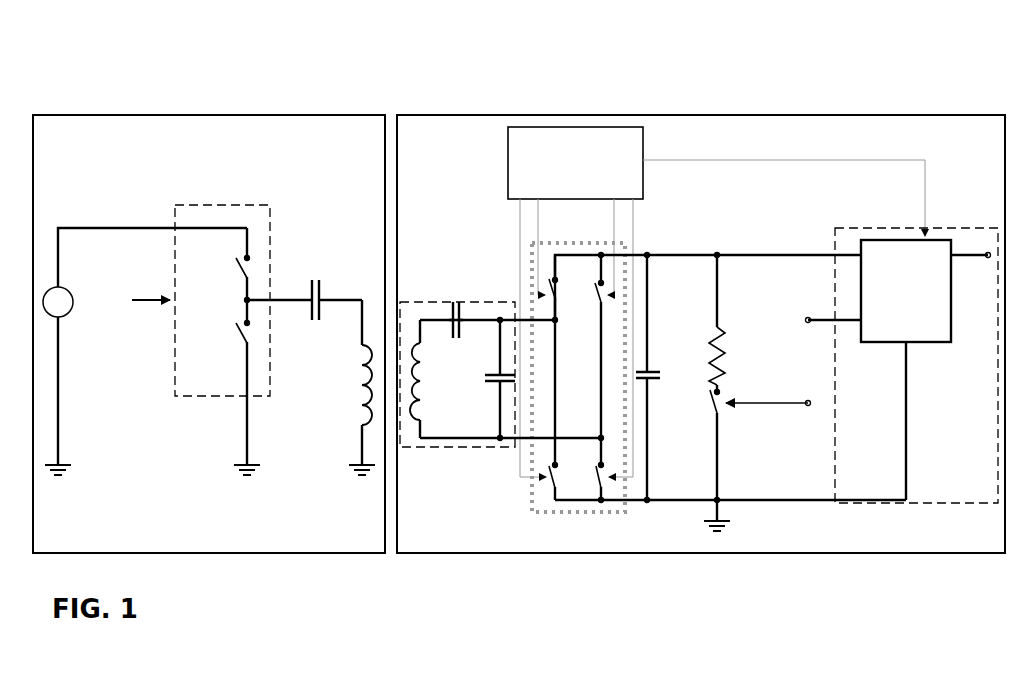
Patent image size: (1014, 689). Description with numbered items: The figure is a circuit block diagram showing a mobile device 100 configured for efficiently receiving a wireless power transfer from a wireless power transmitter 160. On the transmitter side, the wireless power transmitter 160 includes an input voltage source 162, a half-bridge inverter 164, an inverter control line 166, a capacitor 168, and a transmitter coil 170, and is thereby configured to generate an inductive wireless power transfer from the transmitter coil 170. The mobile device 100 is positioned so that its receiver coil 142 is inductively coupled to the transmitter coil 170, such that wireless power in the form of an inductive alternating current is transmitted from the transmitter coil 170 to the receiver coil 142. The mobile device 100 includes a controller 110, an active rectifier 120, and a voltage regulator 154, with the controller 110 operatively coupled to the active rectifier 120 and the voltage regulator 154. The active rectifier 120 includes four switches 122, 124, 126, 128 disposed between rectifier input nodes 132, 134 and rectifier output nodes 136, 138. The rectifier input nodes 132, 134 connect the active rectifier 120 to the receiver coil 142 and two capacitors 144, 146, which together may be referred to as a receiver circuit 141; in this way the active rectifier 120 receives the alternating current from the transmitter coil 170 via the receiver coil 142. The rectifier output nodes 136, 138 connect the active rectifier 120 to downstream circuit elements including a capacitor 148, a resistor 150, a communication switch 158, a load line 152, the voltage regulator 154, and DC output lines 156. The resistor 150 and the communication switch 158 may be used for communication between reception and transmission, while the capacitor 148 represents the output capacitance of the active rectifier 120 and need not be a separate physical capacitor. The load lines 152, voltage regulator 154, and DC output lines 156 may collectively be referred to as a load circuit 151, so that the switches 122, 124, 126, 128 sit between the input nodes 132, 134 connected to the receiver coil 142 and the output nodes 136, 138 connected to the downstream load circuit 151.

The mobile device 100 is at (485, 92).
The controller 110 is at (716, 302).
The active rectifier 120 is at (535, 252).
The switch 122 is at (551, 284).
The switch 124 is at (598, 300).
The switch 126 is at (550, 487).
The switch 128 is at (597, 486).
The rectifier input node 132 is at (510, 318).
The rectifier input node 134 is at (506, 446).
The rectifier output node 136 is at (660, 254).
The rectifier output node 138 is at (660, 502).
The receiver circuit 141 is at (458, 450).
The receiver coil 142 is at (424, 386).
The capacitor 144 is at (452, 318).
The capacitor 146 is at (493, 375).
The capacitor 148 is at (651, 372).
The resistor 150 is at (725, 356).
The load circuit 151 is at (859, 240).
The load line 152 is at (834, 253).
The voltage regulator 154 is at (905, 240).
The DC output line 156 is at (985, 250).
The communication switch 158 is at (710, 405).
The wireless power transmitter 160 is at (84, 90).
The input voltage source 162 is at (70, 312).
The half-bridge inverter 164 is at (224, 205).
The inverter control line 166 is at (158, 296).
The capacitor 168 is at (320, 288).
The transmitter coil 170 is at (366, 384).